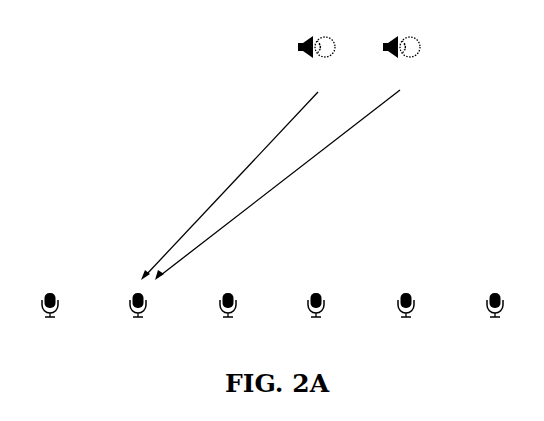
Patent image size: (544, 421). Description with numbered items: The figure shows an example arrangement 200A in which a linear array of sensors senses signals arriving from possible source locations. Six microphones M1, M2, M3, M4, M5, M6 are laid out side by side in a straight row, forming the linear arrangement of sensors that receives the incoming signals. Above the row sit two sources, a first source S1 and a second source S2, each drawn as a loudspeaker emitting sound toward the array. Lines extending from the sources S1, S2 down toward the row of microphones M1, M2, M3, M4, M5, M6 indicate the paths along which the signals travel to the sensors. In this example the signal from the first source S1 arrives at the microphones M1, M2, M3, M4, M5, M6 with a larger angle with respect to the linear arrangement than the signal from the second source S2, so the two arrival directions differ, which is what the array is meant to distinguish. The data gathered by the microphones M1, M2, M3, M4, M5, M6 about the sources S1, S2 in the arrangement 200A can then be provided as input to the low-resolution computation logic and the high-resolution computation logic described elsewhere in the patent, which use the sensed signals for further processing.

The linear microphone array arrangement 200A is at (321, 251).
The first source signal S1 is at (238, 158).
The second source signal S2 is at (287, 158).
The microphone M1 is at (50, 316).
The microphone M2 is at (138, 316).
The microphone M3 is at (228, 316).
The microphone M4 is at (316, 316).
The microphone M5 is at (406, 316).
The microphone M6 is at (495, 316).